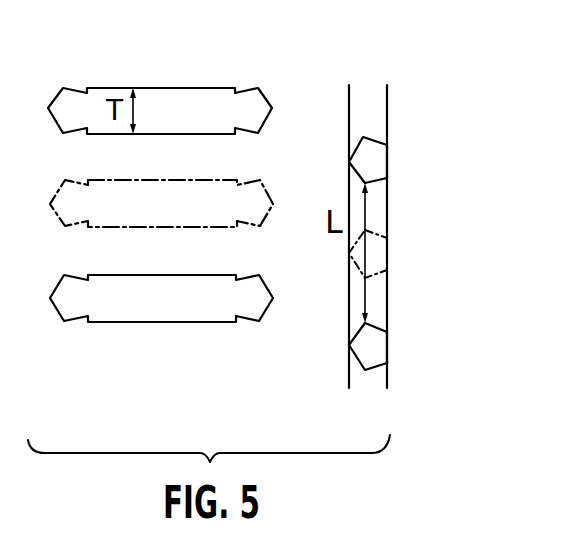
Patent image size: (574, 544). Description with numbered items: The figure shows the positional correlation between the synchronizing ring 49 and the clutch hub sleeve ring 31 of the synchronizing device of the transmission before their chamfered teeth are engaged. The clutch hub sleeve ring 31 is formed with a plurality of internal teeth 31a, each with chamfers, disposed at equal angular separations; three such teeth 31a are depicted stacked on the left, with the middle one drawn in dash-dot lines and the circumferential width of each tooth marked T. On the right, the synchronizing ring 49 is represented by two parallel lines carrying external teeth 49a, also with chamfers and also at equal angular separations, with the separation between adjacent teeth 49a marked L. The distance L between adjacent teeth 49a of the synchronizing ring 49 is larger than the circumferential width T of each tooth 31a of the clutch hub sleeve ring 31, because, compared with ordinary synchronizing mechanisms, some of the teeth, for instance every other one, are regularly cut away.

The clutch hub sleeve ring 31 is at (151, 224).
The internal teeth 31a is at (178, 105).
The synchronizing ring 49 is at (377, 204).
The external teeth 49a is at (378, 163).